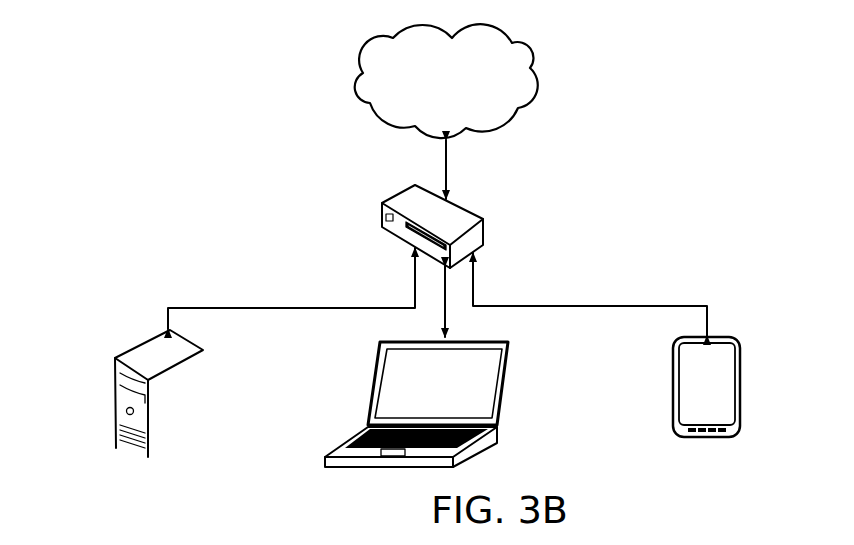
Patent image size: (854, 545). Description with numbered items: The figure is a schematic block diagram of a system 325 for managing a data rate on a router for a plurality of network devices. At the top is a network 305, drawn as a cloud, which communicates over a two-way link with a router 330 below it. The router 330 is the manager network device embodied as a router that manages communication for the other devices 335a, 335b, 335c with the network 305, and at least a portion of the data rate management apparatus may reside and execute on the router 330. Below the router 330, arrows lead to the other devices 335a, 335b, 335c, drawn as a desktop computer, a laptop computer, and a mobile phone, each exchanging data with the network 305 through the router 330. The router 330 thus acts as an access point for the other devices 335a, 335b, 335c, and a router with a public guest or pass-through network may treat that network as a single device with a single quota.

The system 325 is at (131, 72).
The network 305 is at (428, 104).
The router 330 is at (511, 208).
The other device 335a is at (115, 403).
The other device 335b is at (372, 385).
The other device 335c is at (672, 378).